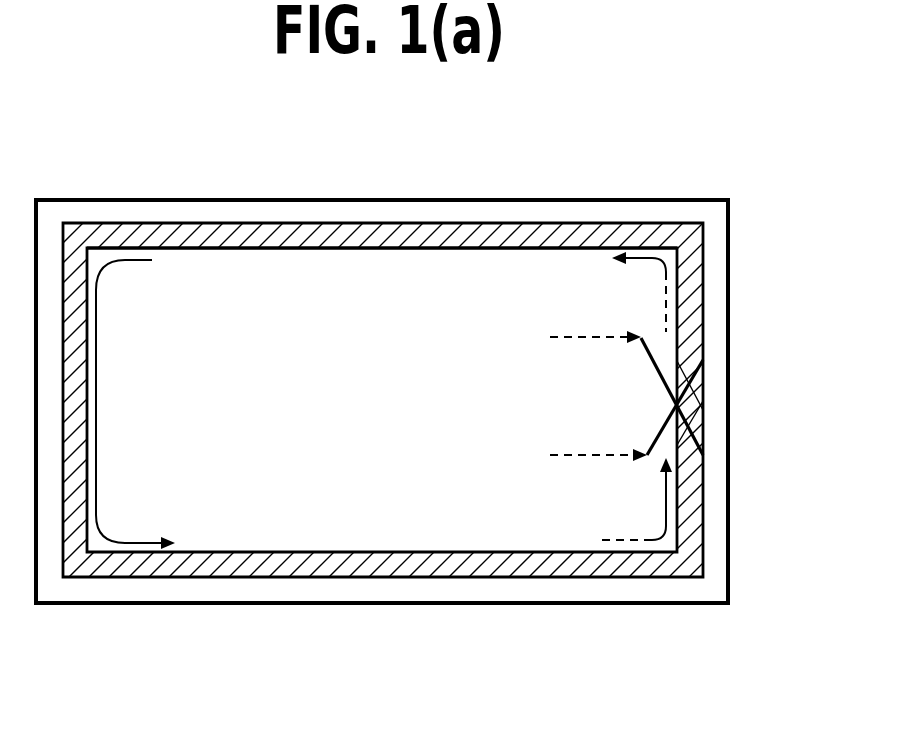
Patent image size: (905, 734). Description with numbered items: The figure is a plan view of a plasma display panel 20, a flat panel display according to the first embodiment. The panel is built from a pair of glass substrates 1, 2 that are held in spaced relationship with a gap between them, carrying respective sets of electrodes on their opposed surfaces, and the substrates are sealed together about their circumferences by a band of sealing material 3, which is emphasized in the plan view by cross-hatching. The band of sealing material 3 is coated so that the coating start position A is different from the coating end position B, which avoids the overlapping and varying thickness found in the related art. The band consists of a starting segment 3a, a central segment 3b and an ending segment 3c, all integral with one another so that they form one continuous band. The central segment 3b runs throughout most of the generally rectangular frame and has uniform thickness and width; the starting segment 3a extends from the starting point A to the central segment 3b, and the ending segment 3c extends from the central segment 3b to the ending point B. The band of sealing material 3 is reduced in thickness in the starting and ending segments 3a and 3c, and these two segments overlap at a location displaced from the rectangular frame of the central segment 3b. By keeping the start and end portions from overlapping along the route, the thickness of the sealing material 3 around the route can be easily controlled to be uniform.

The glass substrate 1 is at (595, 212).
The glass substrate 2 is at (394, 330).
The band of sealing material 3 is at (287, 222).
The starting segment 3a is at (656, 452).
The central segment 3b is at (345, 243).
The ending segment 3c is at (652, 366).
The plasma display panel 20 is at (806, 365).
The coating start position A is at (582, 454).
The coating end position B is at (579, 335).